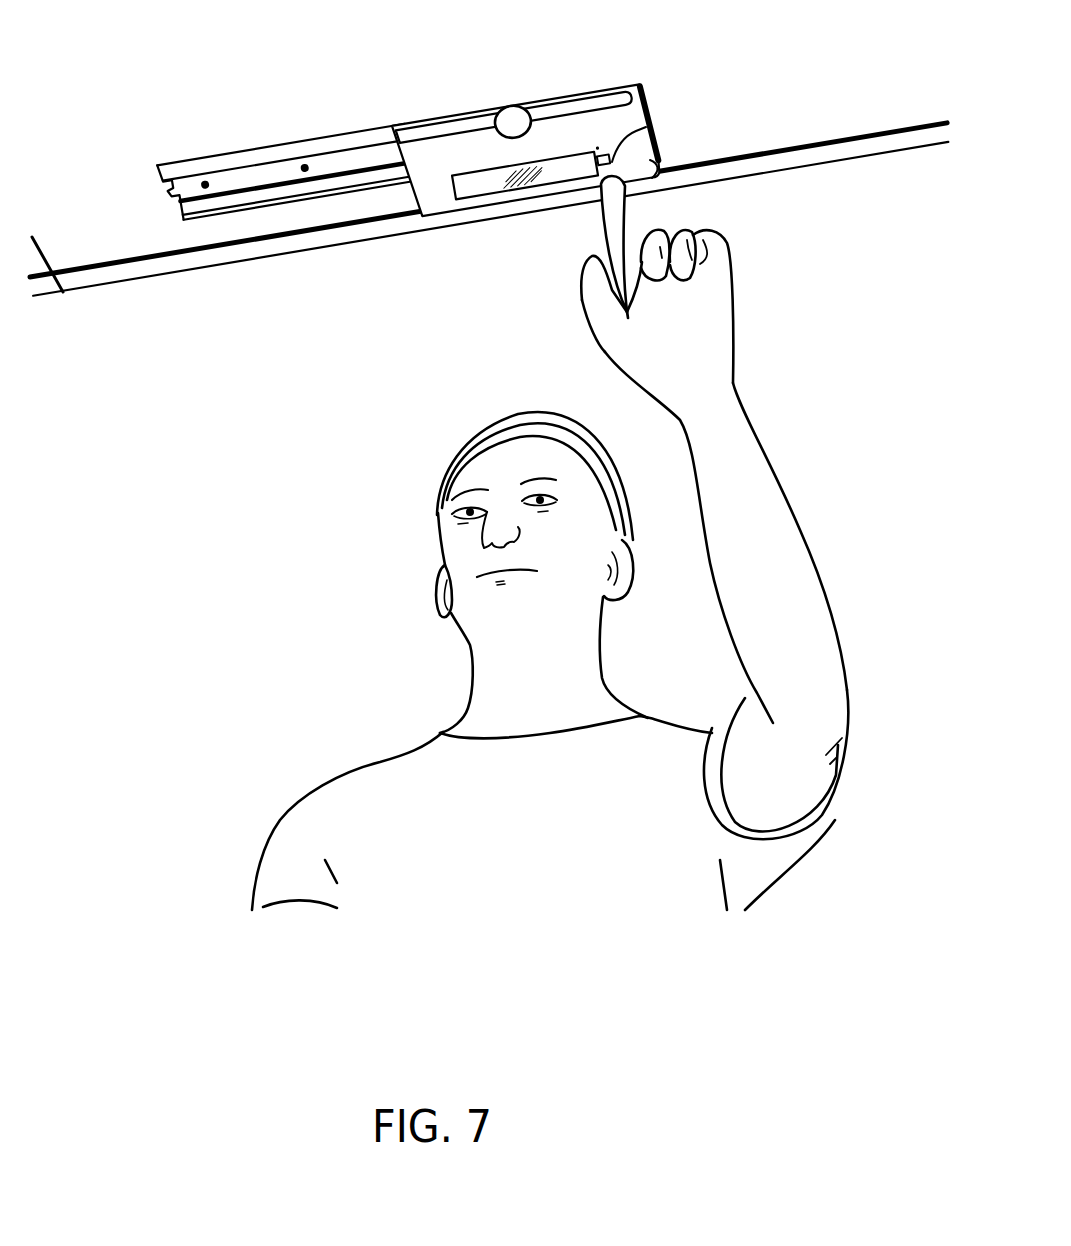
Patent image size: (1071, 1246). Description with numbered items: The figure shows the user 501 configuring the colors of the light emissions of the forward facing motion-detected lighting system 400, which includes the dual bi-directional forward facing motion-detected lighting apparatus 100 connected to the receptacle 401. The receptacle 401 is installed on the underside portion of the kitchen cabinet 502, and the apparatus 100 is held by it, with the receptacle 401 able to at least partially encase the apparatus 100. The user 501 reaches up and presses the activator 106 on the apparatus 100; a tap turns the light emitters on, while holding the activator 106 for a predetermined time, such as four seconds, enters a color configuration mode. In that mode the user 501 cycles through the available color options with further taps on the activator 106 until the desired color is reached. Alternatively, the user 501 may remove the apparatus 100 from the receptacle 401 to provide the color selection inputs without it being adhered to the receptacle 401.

The dual bi-directional forward facing motion-detected lighting apparatus 100 is at (660, 170).
The activator 106 is at (651, 153).
The forward facing motion-detected lighting system 400 is at (390, 108).
The receptacle 401 is at (243, 148).
The user 501 is at (412, 767).
The kitchen cabinet 502 is at (798, 130).